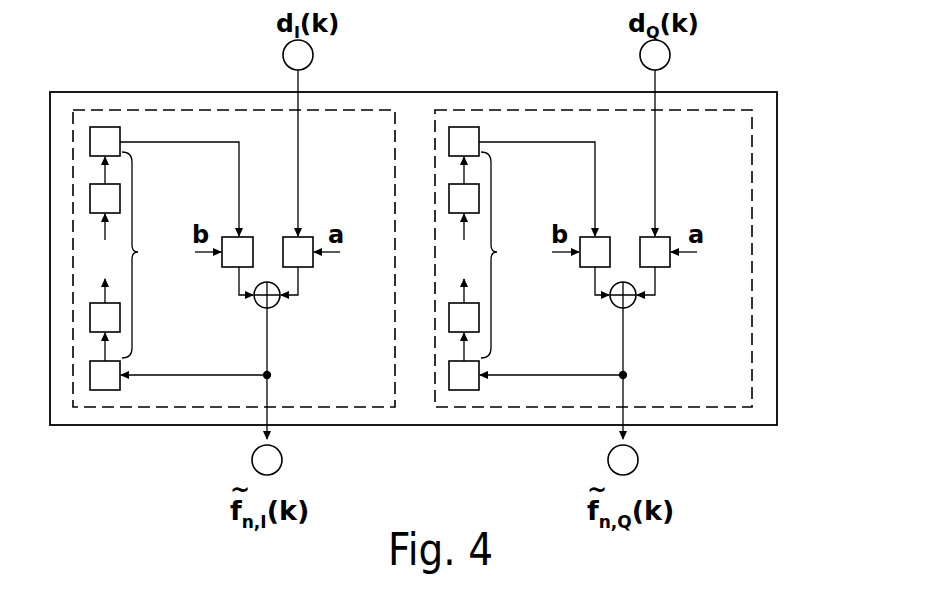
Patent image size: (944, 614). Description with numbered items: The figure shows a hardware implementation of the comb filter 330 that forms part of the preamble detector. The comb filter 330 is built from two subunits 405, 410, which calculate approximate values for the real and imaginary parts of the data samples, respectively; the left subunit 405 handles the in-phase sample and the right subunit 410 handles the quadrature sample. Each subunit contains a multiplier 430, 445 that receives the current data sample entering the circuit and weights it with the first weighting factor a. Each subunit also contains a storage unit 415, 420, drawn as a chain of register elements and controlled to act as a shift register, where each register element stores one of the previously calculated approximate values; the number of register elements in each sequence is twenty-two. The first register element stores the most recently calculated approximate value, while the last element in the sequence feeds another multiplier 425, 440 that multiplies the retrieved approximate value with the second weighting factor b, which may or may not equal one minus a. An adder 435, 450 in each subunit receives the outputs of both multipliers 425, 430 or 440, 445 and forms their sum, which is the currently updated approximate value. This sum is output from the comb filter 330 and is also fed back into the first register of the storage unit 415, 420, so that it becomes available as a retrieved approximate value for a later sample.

The comb filter 330 is at (757, 92).
The first subunit 405 is at (365, 110).
The second subunit 410 is at (438, 110).
The storage unit 415 is at (138, 258).
The storage unit 420 is at (497, 258).
The multiplier 425 is at (253, 237).
The multiplier 430 is at (312, 237).
The adder 435 is at (278, 302).
The multiplier 440 is at (613, 216).
The multiplier 445 is at (673, 216).
The adder 450 is at (650, 319).